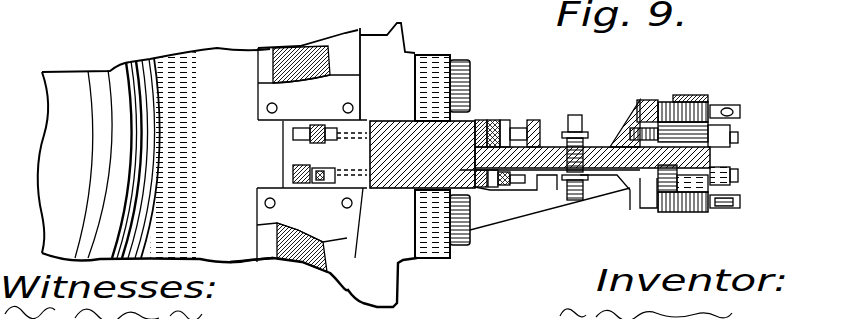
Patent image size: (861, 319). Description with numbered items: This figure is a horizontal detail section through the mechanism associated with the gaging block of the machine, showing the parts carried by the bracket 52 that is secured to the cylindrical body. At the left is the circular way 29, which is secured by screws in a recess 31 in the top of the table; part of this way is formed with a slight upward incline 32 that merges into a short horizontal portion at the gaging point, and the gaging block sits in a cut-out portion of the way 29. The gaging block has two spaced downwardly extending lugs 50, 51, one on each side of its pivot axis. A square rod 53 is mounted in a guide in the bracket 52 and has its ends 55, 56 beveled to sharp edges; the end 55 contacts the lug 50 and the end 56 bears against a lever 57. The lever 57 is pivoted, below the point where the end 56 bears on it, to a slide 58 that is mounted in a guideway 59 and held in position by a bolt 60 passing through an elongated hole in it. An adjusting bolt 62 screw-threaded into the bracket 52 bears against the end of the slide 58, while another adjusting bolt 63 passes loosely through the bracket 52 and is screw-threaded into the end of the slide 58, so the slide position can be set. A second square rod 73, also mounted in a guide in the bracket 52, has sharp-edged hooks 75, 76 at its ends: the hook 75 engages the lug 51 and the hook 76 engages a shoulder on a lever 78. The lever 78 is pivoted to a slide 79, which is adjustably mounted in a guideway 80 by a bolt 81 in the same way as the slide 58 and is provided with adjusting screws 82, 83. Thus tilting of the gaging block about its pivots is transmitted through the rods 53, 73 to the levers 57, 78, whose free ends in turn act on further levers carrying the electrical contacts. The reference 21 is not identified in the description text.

The body casing 21 is at (383, 278).
The circular way 29 is at (340, 55).
The recess 31 is at (282, 283).
The upward incline 32 is at (302, 62).
The lug 50 is at (296, 177).
The lug 51 is at (330, 97).
The bracket 52 is at (437, 240).
The square rod 53 is at (401, 199).
The beveled end 55 is at (322, 183).
The beveled end 56 is at (499, 198).
The lever 57 is at (513, 190).
The slide 58 is at (548, 180).
The guideway 59 is at (625, 195).
The bolt 60 is at (583, 193).
The adjusting bolt 62 is at (737, 203).
The adjusting bolt 63 is at (728, 176).
The square rod 73 is at (393, 114).
The hook 75 is at (306, 136).
The hook 76 is at (538, 118).
The lever 78 is at (503, 120).
The slide 79 is at (640, 112).
The guideway 80 is at (604, 140).
The bolt 81 is at (587, 118).
The adjusting screw 82 is at (740, 108).
The adjusting screw 83 is at (730, 133).